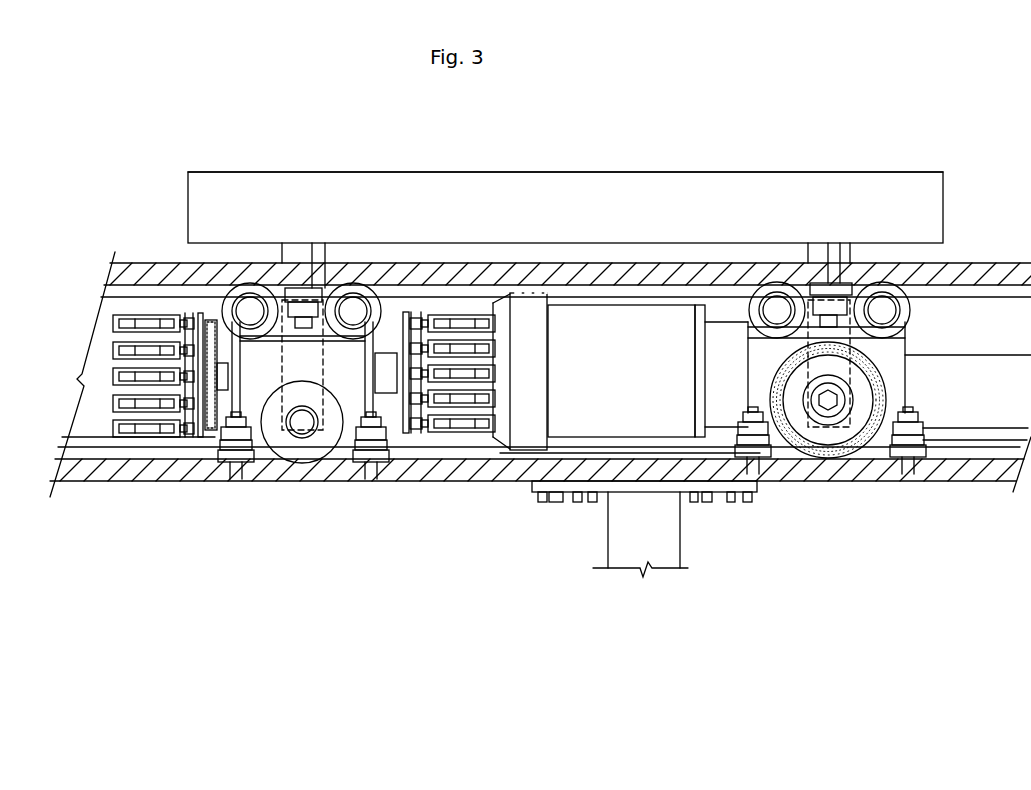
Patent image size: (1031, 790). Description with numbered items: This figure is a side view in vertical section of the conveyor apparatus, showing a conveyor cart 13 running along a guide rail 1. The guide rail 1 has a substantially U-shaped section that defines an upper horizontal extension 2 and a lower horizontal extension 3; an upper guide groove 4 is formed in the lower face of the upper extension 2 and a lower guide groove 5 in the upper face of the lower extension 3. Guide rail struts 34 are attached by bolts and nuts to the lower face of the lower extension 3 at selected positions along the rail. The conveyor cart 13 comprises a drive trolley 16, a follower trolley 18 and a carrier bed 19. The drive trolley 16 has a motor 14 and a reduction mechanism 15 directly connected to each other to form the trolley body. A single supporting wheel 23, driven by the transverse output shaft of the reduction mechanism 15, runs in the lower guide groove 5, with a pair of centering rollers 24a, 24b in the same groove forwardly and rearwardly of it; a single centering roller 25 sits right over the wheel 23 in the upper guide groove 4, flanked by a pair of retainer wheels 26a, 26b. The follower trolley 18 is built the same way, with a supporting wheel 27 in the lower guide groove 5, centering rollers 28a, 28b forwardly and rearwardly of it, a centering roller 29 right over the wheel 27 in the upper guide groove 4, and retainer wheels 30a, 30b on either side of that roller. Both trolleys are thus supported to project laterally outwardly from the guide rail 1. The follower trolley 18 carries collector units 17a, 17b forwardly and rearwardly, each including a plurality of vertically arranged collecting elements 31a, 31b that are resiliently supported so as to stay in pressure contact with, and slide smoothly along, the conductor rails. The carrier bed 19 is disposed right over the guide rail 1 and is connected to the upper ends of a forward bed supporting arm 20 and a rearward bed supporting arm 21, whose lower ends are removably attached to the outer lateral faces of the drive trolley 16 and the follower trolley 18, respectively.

The guide rail 1 is at (128, 256).
The upper horizontal extension 2 is at (590, 272).
The lower horizontal extension 3 is at (513, 479).
The upper guide groove 4 is at (418, 286).
The lower guide groove 5 is at (183, 455).
The conveyor cart 13 is at (858, 165).
The motor 14 is at (638, 401).
The reduction mechanism 15 is at (897, 387).
The drive trolley 16 is at (895, 365).
The collector unit 17a is at (461, 437).
The collector unit 17b is at (138, 436).
The follower trolley 18 is at (258, 447).
The carrier bed 19 is at (700, 187).
The bed supporting arm 20 is at (840, 243).
The bed supporting arm 21 is at (293, 250).
The supporting wheel 23 is at (803, 448).
The centering roller 24a is at (927, 450).
The centering roller 24b is at (748, 455).
The centering roller 25 is at (825, 285).
The retainer wheel 26a is at (897, 284).
The retainer wheel 26b is at (760, 287).
The supporting wheel 27 is at (310, 455).
The centering roller 28a is at (375, 462).
The centering roller 28b is at (228, 462).
The centering roller 29 is at (312, 286).
The retainer wheel 30a is at (374, 284).
The retainer wheel 30b is at (231, 298).
The collecting element 31a is at (478, 376).
The collecting element 31b is at (130, 377).
The guide rail strut 34 is at (622, 553).